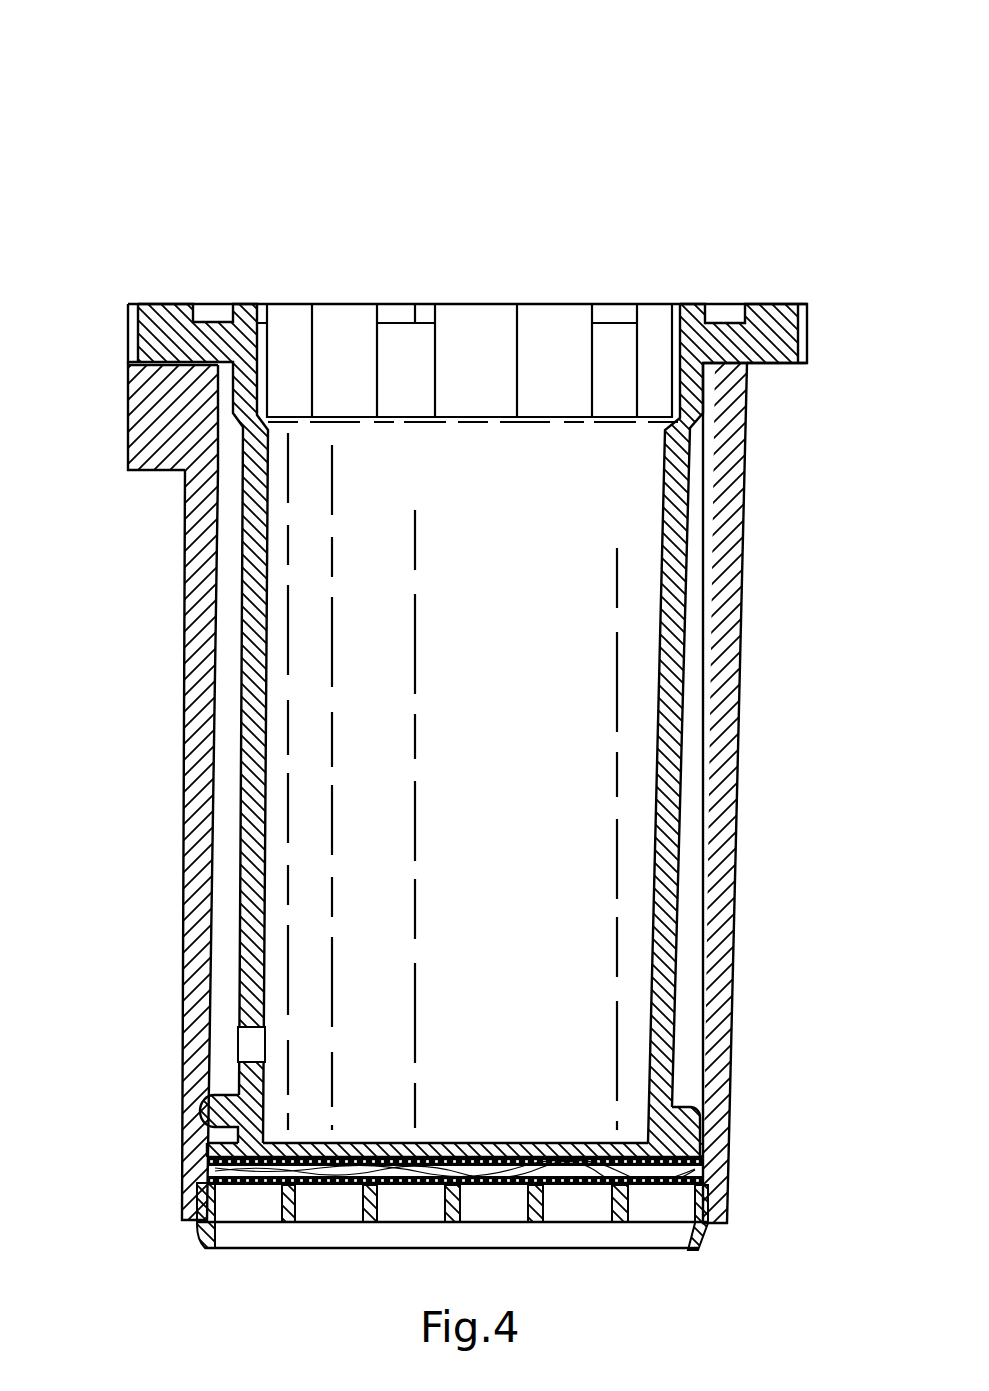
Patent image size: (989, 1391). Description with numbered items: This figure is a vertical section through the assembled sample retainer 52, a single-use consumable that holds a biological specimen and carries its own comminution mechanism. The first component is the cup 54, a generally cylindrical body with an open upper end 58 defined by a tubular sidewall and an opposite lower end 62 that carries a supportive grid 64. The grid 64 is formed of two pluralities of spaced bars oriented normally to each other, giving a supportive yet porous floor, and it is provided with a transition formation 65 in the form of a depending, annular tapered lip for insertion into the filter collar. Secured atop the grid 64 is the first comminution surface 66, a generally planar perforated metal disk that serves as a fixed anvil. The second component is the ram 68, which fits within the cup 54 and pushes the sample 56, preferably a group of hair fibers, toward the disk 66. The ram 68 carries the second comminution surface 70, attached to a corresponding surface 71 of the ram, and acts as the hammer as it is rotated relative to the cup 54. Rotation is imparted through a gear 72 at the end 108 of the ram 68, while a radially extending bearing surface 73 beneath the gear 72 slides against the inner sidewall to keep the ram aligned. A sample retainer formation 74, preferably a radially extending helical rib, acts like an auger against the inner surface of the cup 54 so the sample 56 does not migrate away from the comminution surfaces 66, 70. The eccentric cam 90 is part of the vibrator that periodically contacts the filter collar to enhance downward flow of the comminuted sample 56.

The sample retainer 52 is at (83, 152).
The cup 54 is at (733, 565).
The sample 56 is at (693, 1172).
The open upper end 58 is at (750, 388).
The lower end 62 is at (723, 1205).
The supportive grid 64 is at (298, 1207).
The transition formation 65 is at (703, 1240).
The first comminution surface 66 is at (257, 1183).
The ram 68 is at (255, 627).
The second comminution surface 70 is at (670, 1145).
The corresponding surface 71 is at (560, 1143).
The gear 72 is at (767, 313).
The bearing surface 73 is at (703, 405).
The sample retainer formation 74 is at (217, 1110).
The eccentric cam 90 is at (153, 407).
The end of the ram 108 is at (240, 322).